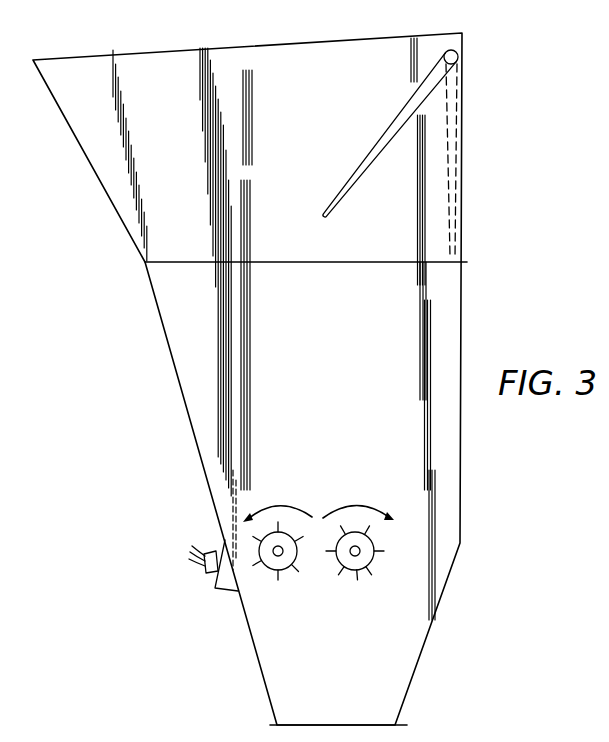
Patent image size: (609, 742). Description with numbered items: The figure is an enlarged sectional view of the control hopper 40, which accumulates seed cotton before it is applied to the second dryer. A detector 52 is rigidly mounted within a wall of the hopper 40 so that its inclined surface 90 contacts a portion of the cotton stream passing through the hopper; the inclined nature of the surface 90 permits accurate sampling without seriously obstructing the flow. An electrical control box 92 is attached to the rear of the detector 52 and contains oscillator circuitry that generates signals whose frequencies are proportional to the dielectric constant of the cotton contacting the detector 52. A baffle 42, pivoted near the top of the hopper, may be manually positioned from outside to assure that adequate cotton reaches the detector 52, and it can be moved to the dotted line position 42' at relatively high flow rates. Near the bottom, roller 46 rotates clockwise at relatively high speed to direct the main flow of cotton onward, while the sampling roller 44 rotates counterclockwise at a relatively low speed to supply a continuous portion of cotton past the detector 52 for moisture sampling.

The control hopper 40 is at (471, 272).
The baffle 42 is at (390, 133).
The dotted line position of the baffle 42' is at (476, 161).
The sampling roller 44 is at (291, 566).
The roller 46 is at (359, 570).
The detector 52 is at (213, 543).
The inclined surface 90 is at (237, 580).
The electrical control box 92 is at (212, 574).